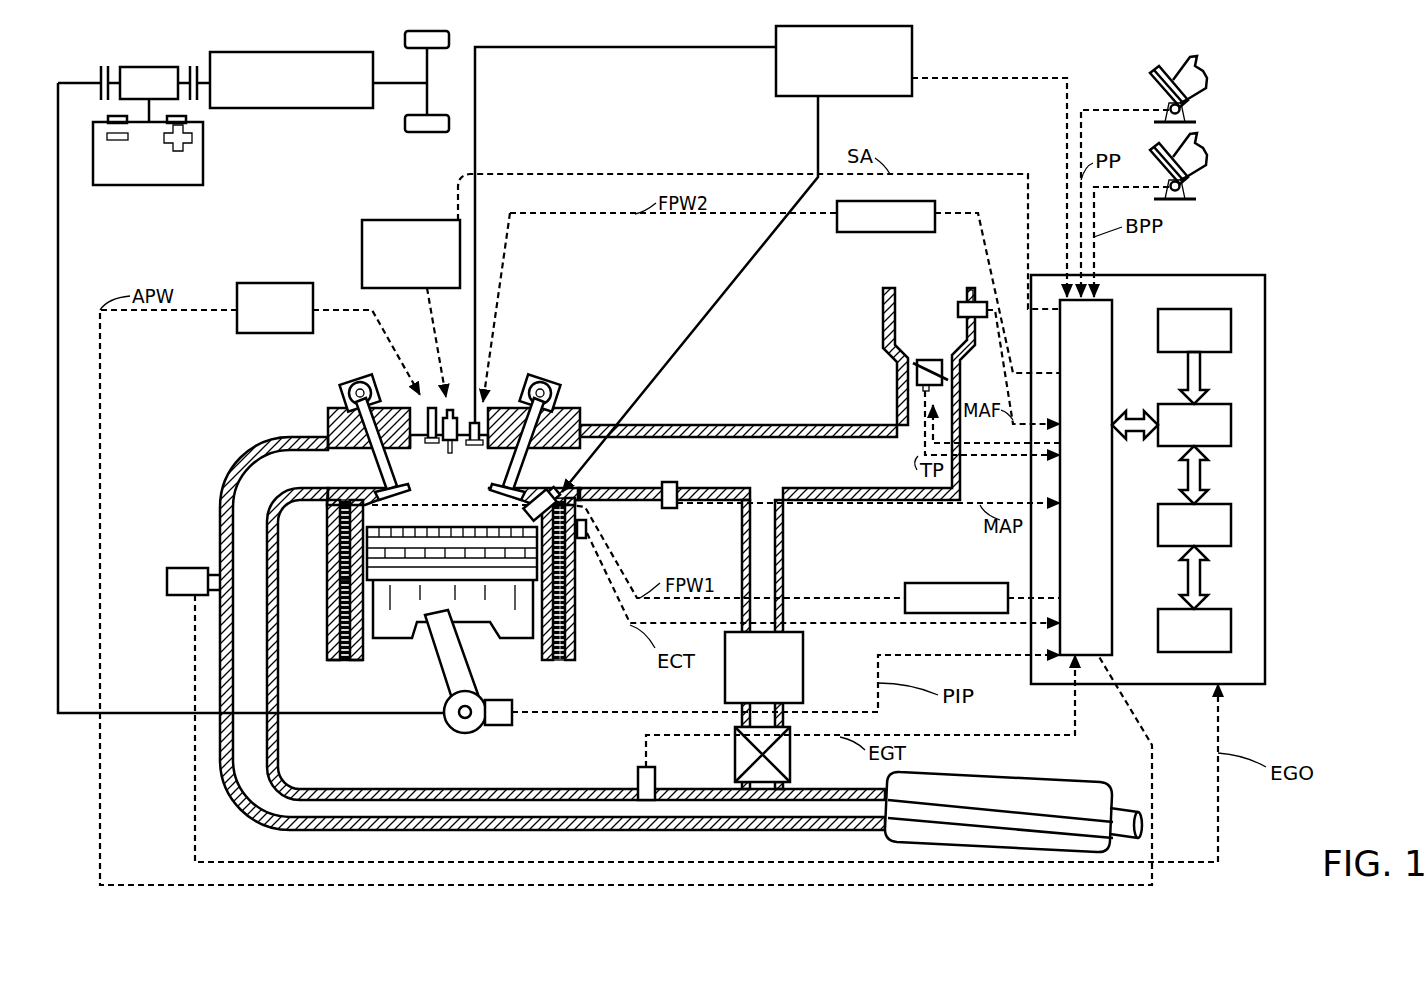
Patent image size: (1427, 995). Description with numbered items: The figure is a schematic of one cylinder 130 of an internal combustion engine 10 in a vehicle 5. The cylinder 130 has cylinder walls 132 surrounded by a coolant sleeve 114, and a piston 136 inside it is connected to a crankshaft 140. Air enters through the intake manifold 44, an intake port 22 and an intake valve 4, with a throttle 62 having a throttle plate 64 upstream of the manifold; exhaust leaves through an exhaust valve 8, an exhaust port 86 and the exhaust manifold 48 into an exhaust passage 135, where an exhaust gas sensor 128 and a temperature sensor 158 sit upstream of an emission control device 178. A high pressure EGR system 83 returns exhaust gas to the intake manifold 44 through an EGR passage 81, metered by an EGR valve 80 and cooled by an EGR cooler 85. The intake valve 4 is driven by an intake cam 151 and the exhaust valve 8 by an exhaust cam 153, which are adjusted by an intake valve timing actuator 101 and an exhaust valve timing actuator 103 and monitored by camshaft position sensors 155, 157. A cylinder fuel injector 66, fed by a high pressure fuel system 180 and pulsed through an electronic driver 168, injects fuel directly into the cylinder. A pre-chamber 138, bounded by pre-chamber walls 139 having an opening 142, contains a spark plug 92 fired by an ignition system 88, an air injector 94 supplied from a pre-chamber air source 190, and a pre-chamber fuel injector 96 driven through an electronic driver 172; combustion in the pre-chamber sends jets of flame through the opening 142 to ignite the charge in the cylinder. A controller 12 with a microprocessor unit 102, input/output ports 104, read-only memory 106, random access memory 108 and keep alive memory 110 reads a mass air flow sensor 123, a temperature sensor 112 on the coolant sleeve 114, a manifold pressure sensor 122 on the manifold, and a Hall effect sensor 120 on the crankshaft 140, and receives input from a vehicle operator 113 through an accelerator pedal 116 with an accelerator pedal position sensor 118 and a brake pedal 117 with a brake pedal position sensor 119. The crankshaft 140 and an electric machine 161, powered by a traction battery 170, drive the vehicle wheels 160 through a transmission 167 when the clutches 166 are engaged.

The vehicle 5 is at (1370, 66).
The internal combustion engine 10 is at (303, 256).
The controller 12 is at (1169, 464).
The intake valve 4 is at (497, 418).
The exhaust valve 8 is at (400, 488).
The intake port 22 is at (618, 473).
The intake manifold 44 is at (848, 475).
The exhaust manifold 48 is at (258, 566).
The throttle 62 is at (950, 373).
The throttle plate 64 is at (913, 368).
The cylinder fuel injector 66 is at (548, 493).
The EGR valve 80 is at (735, 772).
The EGR passage 81 is at (742, 556).
The high pressure EGR system 83 is at (812, 563).
The EGR cooler 85 is at (803, 650).
The exhaust port 86 is at (314, 479).
The ignition system 88 is at (380, 220).
The spark plug 92 is at (447, 415).
The air injector 94 is at (418, 423).
The pre-chamber fuel injector 96 is at (478, 423).
The intake valve timing actuator 101 is at (549, 378).
The microprocessor unit 102 is at (1231, 418).
The exhaust valve timing actuator 103 is at (348, 385).
The input/output ports 104 is at (1112, 305).
The read-only memory 106 is at (1231, 322).
The random access memory 108 is at (1231, 522).
The keep alive memory 110 is at (1231, 625).
The temperature sensor 112 is at (590, 540).
The vehicle operator 113 is at (1205, 72).
The coolant sleeve 114 is at (567, 635).
The accelerator pedal 116 is at (1158, 88).
The brake pedal 117 is at (1158, 165).
The accelerator pedal position sensor 118 is at (1185, 108).
The brake pedal position sensor 119 is at (1185, 185).
The Hall effect sensor 120 is at (505, 727).
The MAP sensor 122 is at (670, 510).
The mass air flow sensor 123 is at (963, 302).
The exhaust gas sensor 128 is at (188, 567).
The cylinder 130 is at (340, 522).
The cylinder walls 132 is at (364, 665).
The exhaust passage 135 is at (370, 833).
The piston 136 is at (427, 612).
The pre-chamber 138 is at (342, 575).
The pre-chamber walls 139 is at (445, 506).
The crankshaft 140 is at (452, 731).
The opening 142 is at (348, 598).
The intake cam 151 is at (541, 382).
The exhaust cam 153 is at (360, 382).
The camshaft position sensor 155 is at (558, 398).
The camshaft position sensor 157 is at (334, 402).
The temperature sensor 158 is at (638, 770).
The vehicle wheels 160 is at (428, 137).
The electric machine 161 is at (124, 67).
The clutch 166 is at (99, 68).
The transmission 167 is at (350, 110).
The electronic driver 168 is at (905, 590).
The traction battery 170 is at (140, 185).
The electronic driver 172 is at (925, 201).
The emission control device 178 is at (1073, 778).
The high pressure fuel system 180 is at (912, 40).
The pre-chamber air source 190 is at (235, 298).